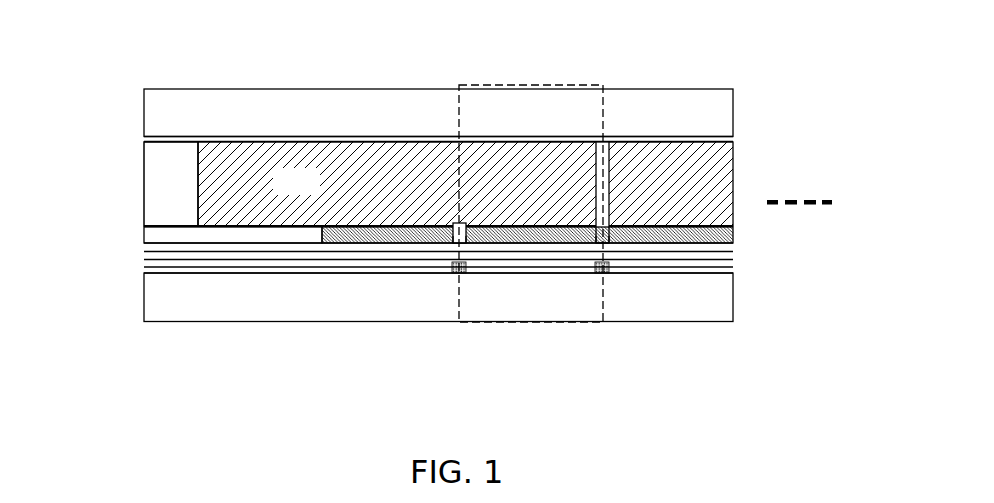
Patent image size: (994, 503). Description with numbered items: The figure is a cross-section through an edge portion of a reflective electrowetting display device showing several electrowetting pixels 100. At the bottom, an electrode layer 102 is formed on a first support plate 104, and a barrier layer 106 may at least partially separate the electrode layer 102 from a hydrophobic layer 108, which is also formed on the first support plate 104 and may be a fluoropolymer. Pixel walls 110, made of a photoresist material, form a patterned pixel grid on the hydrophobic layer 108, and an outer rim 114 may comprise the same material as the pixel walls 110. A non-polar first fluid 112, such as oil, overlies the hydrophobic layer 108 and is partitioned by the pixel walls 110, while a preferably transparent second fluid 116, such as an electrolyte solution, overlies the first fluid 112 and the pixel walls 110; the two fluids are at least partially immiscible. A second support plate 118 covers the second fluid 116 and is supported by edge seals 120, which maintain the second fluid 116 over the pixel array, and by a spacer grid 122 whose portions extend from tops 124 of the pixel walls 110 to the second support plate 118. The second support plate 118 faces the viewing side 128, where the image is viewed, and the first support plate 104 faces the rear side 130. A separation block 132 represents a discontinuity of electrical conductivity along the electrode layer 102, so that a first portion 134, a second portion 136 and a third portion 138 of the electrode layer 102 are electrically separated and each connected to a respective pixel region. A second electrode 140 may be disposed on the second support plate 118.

The electrowetting pixel 100 is at (458, 312).
The electrode layer 102 is at (144, 268).
The first support plate 104 is at (233, 309).
The barrier layer 106 is at (144, 259).
The hydrophobic layer 108 is at (144, 248).
The pixel walls 110 is at (453, 243).
The first fluid 112 is at (412, 243).
The outer rim 114 is at (144, 232).
The second fluid 116 is at (317, 194).
The second support plate 118 is at (228, 121).
The edge seals 120 is at (191, 191).
The spacer grid 122 is at (610, 158).
The tops of pixel walls 124 is at (452, 224).
The viewing side 128 is at (641, 45).
The rear side 130 is at (395, 412).
The separation block 132 is at (466, 269).
The first portion of electrode layer 134 is at (372, 274).
The second portion of electrode layer 136 is at (582, 273).
The third portion of electrode layer 138 is at (650, 275).
The second electrode 140 is at (264, 137).